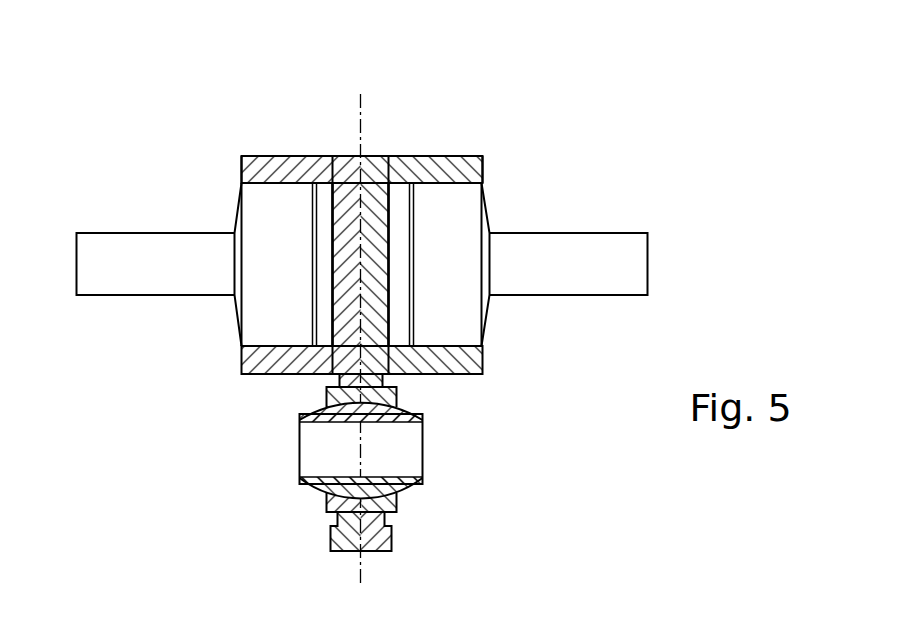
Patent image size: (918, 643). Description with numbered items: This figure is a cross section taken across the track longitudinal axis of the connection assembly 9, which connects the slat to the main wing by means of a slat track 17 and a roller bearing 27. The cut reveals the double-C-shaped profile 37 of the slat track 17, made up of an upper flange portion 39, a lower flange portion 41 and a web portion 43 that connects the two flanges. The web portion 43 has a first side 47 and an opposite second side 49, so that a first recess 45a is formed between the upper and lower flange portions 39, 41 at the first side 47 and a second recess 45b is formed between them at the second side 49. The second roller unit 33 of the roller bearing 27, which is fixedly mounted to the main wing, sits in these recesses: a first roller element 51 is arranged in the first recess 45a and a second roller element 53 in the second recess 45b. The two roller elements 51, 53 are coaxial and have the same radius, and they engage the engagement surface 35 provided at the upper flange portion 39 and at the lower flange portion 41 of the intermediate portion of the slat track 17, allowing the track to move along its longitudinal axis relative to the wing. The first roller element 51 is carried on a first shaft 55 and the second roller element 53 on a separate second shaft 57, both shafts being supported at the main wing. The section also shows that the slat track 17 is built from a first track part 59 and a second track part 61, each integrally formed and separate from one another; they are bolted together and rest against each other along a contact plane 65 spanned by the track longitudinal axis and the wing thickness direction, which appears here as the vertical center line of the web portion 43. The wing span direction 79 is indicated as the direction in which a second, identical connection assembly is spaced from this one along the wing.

The connection assembly 9 is at (549, 108).
The slat track 17 is at (427, 167).
The roller bearing 27 is at (148, 100).
The second roller unit 33 is at (201, 134).
The engagement surface 35 is at (287, 178).
The double-C-shaped profile 37 is at (553, 406).
The upper flange portion 39 is at (313, 173).
The lower flange portion 41 is at (287, 365).
The web portion 43 is at (333, 282).
The first recess 45a is at (325, 209).
The second recess 45b is at (400, 203).
The first side 47 is at (333, 320).
The second side 49 is at (391, 322).
The first roller element 51 is at (290, 257).
The second roller element 53 is at (468, 257).
The first shaft 55 is at (103, 280).
The second shaft 57 is at (630, 280).
The first track part 59 is at (255, 173).
The second track part 61 is at (483, 165).
The contact plane 65 is at (355, 98).
The wing span direction 79 is at (236, 345).